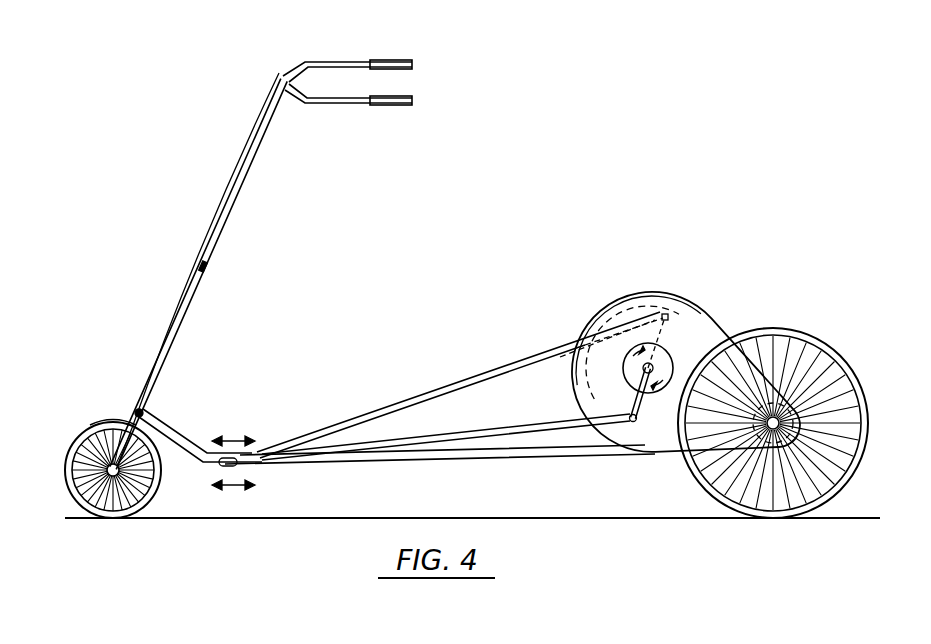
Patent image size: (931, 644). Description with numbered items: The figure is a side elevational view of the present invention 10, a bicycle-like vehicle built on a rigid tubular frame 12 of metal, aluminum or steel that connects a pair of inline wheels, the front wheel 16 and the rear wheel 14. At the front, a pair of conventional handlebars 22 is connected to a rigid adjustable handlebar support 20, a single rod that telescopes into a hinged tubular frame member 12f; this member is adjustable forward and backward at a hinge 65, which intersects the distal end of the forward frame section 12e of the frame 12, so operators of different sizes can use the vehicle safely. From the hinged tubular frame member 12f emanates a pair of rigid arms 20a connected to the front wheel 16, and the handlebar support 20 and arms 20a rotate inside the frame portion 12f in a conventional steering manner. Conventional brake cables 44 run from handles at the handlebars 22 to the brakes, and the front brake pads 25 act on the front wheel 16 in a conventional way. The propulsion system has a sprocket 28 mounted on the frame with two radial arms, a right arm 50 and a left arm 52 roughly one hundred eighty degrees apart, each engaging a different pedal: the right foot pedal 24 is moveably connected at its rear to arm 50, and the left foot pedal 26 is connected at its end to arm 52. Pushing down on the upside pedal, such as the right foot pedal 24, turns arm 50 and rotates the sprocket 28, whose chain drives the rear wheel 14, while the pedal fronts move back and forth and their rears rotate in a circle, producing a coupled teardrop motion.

The present invention 10 is at (550, 208).
The frame 12 is at (512, 460).
The forward frame section 12e is at (197, 444).
The hinged tubular frame member 12f is at (205, 276).
The rear wheel 14 is at (832, 352).
The front wheel 16 is at (105, 422).
The handlebar support 20 is at (222, 217).
The rigid arms 20a is at (138, 403).
The handlebars 22 is at (333, 62).
The right foot pedal 24 is at (521, 360).
The front brake pads 25 is at (88, 432).
The left foot pedal 26 is at (541, 422).
The sprocket 28 is at (632, 345).
The brake cables 44 is at (262, 112).
The right arm 50 is at (703, 316).
The left arm 52 is at (640, 300).
The hinge 65 is at (146, 411).